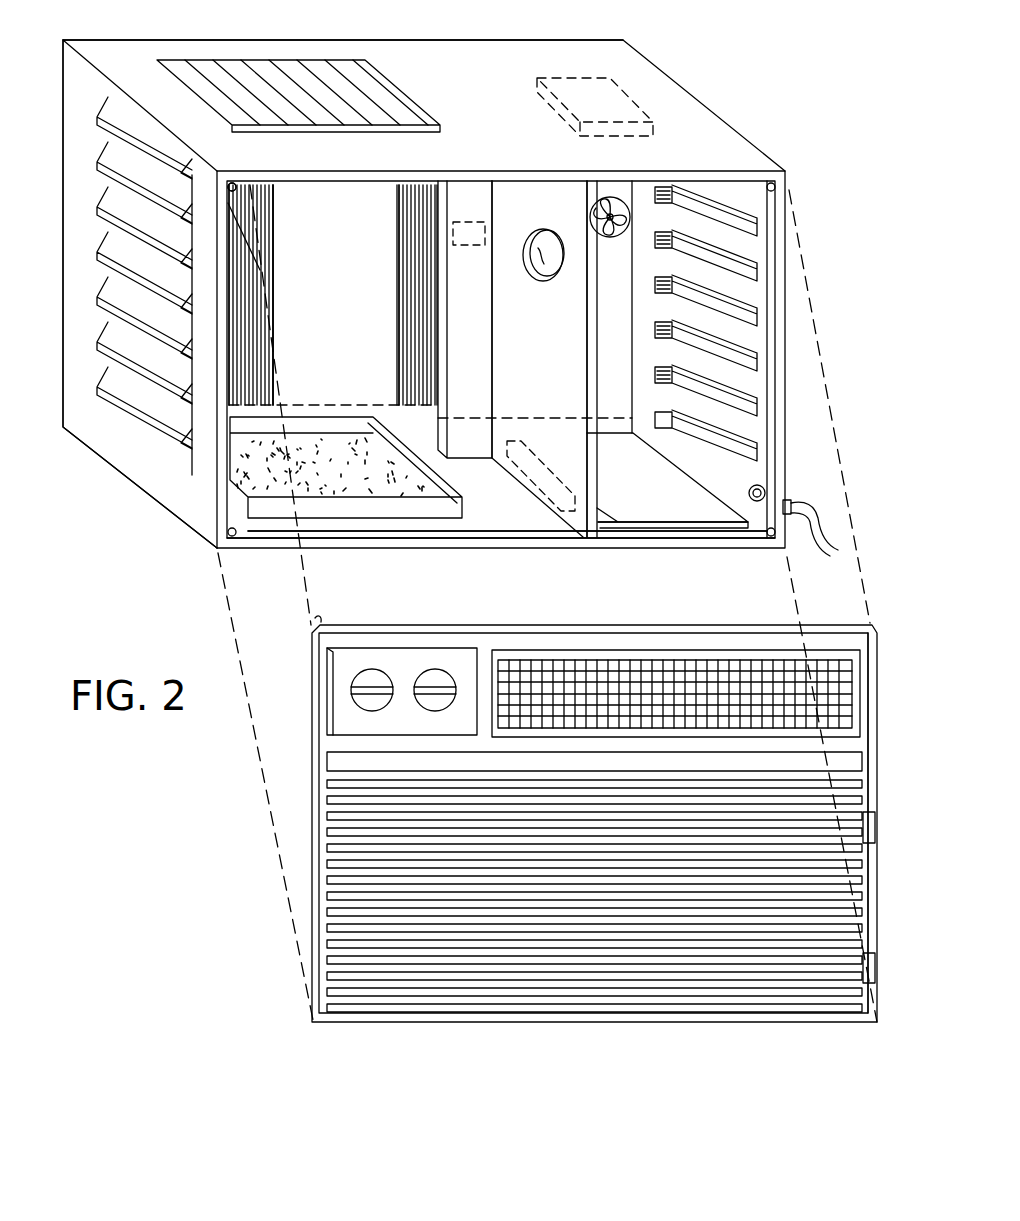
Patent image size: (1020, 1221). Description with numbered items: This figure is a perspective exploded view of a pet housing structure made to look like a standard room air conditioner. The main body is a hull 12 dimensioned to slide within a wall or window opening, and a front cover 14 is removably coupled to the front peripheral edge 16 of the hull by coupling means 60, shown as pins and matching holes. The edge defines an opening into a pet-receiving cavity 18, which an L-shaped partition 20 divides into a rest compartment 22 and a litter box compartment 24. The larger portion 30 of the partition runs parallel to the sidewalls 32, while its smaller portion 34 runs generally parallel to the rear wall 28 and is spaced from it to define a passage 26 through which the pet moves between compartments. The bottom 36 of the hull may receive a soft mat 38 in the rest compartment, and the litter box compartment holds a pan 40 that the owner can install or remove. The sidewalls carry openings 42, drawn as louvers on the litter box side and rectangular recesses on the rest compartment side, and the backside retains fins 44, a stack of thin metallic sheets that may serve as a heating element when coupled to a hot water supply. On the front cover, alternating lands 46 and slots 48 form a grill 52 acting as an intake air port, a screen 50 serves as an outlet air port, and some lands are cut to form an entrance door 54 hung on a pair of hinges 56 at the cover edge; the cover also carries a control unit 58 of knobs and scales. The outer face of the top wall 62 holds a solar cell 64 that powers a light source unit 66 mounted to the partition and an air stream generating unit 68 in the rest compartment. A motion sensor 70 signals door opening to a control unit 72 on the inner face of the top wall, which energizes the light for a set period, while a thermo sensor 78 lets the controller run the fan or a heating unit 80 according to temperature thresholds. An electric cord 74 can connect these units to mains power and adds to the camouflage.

The hull 12 is at (775, 156).
The front cover 14 is at (303, 798).
The front peripheral edge 16 is at (692, 178).
The pet-receiving cavity 18 is at (524, 490).
The partition 20 is at (529, 366).
The rest compartment 22 is at (692, 447).
The litter box compartment 24 is at (320, 298).
The passage 26 is at (432, 370).
The rear wall 28 is at (344, 205).
The larger portion 30 is at (548, 197).
The sidewalls 32 is at (160, 478).
The smaller portion 34 is at (470, 197).
The bottom 36 is at (572, 530).
The mat 38 is at (652, 520).
The pan 40 is at (470, 520).
The openings 42 is at (148, 340).
The fins 44 is at (418, 215).
The lands 46 is at (412, 1003).
The slots 48 is at (488, 988).
The screen 50 is at (724, 672).
The grill 52 is at (614, 990).
The entrance door 54 is at (805, 989).
The hinges 56 is at (876, 972).
The control unit 58 is at (415, 660).
The coupling means 60 is at (236, 188).
The top wall 62 is at (472, 60).
The solar cell 64 is at (268, 72).
The light source unit 66 is at (546, 280).
The air stream generating unit 68 is at (613, 199).
The motion sensor 70 is at (767, 493).
The control unit 72 is at (660, 122).
The electric cord 74 is at (828, 528).
The thermo sensor 78 is at (488, 232).
The heating unit 80 is at (541, 469).